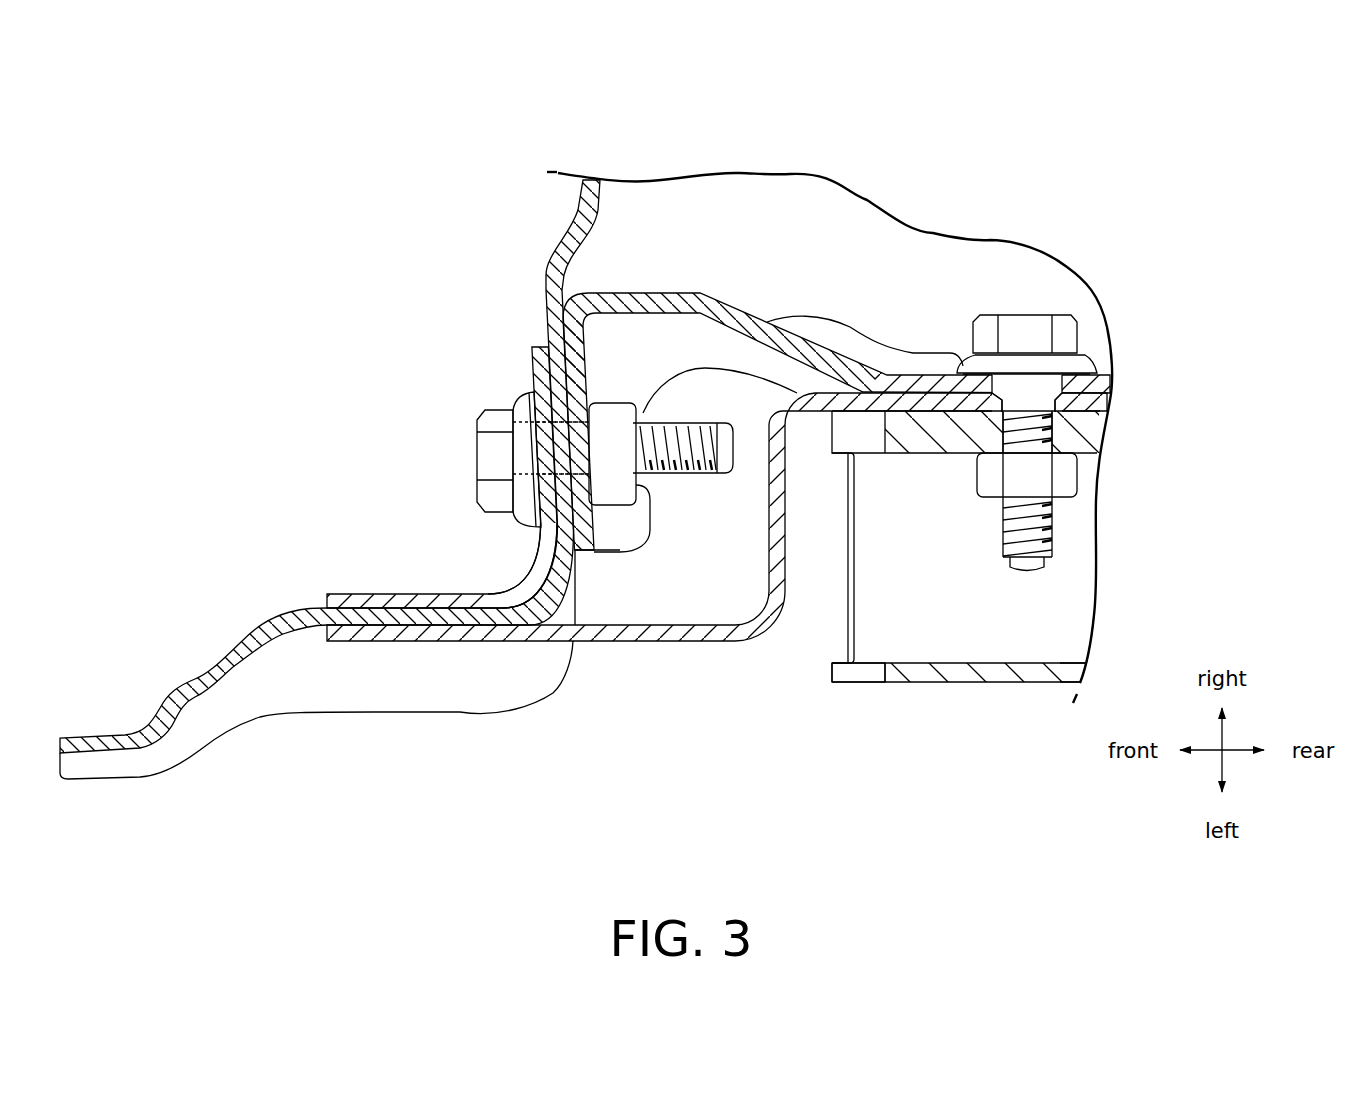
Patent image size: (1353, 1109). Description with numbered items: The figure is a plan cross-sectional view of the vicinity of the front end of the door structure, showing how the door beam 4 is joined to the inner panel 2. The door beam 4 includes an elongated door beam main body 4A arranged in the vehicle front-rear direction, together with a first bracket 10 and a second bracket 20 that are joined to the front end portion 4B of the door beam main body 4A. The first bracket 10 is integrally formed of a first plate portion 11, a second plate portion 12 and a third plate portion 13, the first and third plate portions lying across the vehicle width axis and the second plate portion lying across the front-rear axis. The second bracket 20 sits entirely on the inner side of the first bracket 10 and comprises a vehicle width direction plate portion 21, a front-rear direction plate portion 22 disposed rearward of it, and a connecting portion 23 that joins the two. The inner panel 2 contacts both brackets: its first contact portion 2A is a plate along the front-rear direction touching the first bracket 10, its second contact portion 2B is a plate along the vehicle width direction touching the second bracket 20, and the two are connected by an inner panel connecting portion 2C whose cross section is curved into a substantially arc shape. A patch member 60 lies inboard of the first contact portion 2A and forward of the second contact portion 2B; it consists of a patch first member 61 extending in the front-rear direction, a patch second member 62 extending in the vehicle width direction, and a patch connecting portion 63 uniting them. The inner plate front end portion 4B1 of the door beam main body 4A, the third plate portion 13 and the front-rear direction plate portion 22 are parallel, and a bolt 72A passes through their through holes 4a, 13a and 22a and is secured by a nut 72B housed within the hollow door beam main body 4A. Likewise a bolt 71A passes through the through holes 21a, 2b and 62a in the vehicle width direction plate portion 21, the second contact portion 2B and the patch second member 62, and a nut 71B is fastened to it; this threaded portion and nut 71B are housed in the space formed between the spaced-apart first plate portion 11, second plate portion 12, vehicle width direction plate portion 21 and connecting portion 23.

The inner panel 2 is at (607, 226).
The first contact portion 2A is at (437, 617).
The second contact portion 2B is at (560, 382).
The inner panel connecting portion 2C is at (570, 600).
The through hole 2b is at (562, 470).
The first bracket 10 is at (680, 655).
The first plate portion 11 is at (513, 637).
The second plate portion 12 is at (778, 528).
The third plate portion 13 is at (932, 396).
The through hole 13a is at (1003, 435).
The second bracket 20 is at (762, 288).
The vehicle width direction plate portion 21 is at (591, 522).
The through hole 21a is at (575, 452).
The front-rear direction plate portion 22 is at (968, 376).
The through hole 22a is at (1047, 370).
The connecting portion 23 is at (692, 298).
The door beam 4 is at (988, 694).
The door beam main body 4A is at (1065, 645).
The front end portion 4B is at (922, 612).
The inner plate front end portion 4B1 is at (830, 668).
The through hole 4a is at (1020, 433).
The patch member 60 is at (520, 349).
The patch first member 61 is at (385, 600).
The patch second member 62 is at (535, 373).
The through hole 62a is at (545, 438).
The patch connecting portion 63 is at (533, 575).
The bolt 71A is at (490, 413).
The nut 71B is at (622, 483).
The bolt 72A is at (1030, 333).
The nut 72B is at (1055, 477).